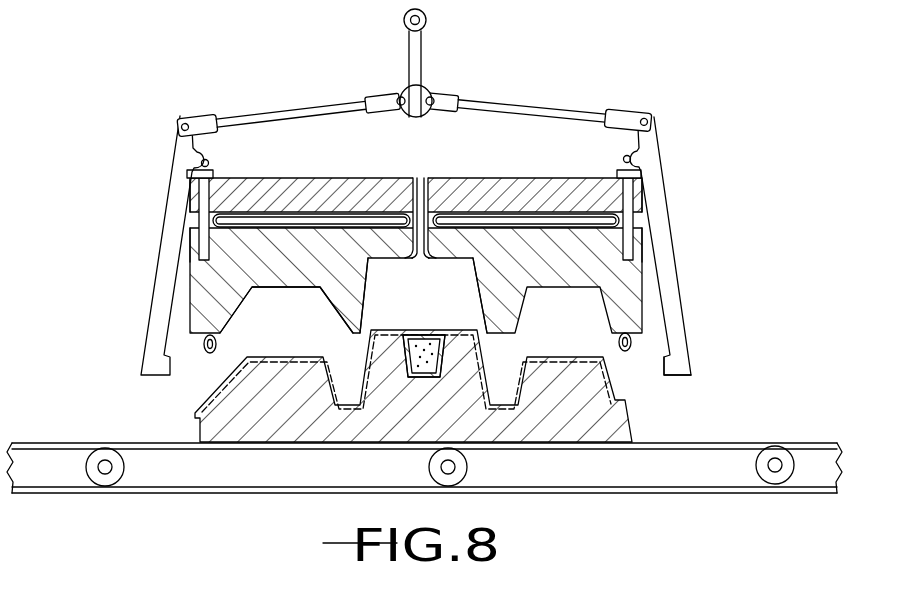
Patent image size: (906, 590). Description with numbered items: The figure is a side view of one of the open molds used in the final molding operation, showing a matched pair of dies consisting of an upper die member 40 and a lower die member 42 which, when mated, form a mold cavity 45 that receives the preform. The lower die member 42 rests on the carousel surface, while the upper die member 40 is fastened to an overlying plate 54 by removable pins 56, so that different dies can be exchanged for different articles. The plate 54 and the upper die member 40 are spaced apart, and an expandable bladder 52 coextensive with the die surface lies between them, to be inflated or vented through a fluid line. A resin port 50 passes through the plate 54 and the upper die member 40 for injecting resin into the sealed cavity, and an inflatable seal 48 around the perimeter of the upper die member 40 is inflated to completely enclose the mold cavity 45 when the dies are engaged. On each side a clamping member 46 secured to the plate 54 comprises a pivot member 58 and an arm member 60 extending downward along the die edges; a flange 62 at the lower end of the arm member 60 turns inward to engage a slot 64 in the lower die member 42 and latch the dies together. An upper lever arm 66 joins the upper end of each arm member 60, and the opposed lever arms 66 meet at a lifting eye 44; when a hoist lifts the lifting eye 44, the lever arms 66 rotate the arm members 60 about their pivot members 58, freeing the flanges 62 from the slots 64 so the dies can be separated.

The upper die member 40 is at (621, 278).
The lower die member 42 is at (625, 415).
The lifting eye 44 is at (430, 19).
The mold cavity 45 is at (272, 333).
The clamping member 46 is at (183, 229).
The inflatable seal 48 is at (200, 354).
The resin port 50 is at (421, 197).
The expandable bladder 52 is at (607, 217).
The plate 54 is at (264, 192).
The removable pin 56 is at (187, 176).
The pivot member 58 is at (623, 159).
The arm member 60 is at (157, 291).
The flange 62 is at (664, 372).
The slot 64 is at (640, 441).
The upper lever arm 66 is at (551, 106).